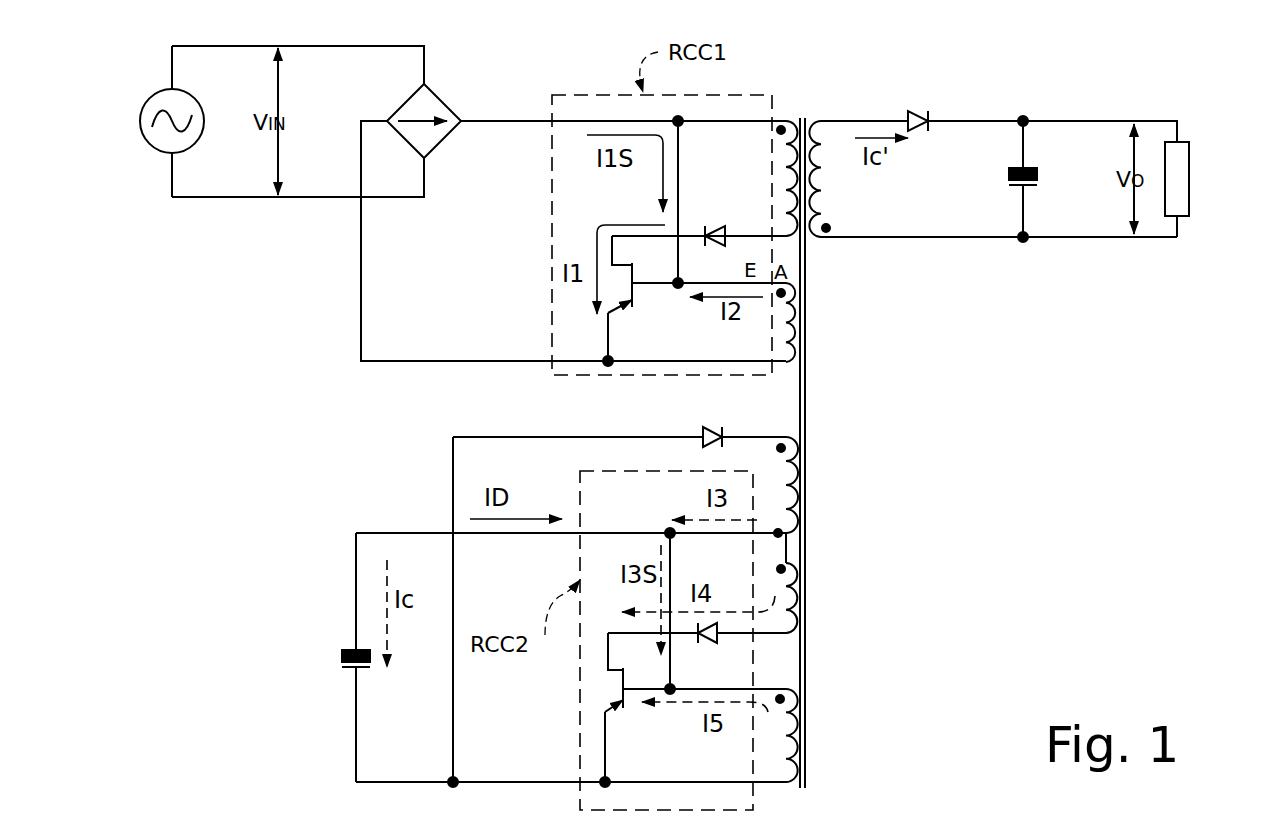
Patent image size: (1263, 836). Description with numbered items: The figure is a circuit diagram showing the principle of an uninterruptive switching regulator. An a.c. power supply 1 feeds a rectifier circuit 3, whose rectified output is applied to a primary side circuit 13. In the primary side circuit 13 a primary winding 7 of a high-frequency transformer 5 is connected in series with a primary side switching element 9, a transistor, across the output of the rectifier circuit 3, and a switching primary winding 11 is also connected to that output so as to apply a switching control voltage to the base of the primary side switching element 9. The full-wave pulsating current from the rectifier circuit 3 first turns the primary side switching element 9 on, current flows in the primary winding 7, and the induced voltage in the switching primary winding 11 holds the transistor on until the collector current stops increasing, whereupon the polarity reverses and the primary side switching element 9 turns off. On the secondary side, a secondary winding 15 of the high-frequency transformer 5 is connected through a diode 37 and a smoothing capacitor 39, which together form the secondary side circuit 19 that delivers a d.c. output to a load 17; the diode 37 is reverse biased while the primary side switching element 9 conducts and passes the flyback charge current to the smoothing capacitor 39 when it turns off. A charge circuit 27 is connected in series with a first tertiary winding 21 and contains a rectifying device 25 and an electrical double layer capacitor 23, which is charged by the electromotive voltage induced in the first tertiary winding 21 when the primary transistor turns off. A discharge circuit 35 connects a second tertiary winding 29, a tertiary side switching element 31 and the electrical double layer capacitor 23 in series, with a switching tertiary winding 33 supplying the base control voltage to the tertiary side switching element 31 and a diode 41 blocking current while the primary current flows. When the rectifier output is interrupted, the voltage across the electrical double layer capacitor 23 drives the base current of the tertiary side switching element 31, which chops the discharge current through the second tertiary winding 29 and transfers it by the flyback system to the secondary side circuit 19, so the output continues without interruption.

The a.c. power supply 1 is at (200, 114).
The rectifier circuit 3 is at (456, 88).
The high-frequency transformer 5 is at (808, 383).
The primary winding 7 is at (789, 118).
The primary side switching element 9 is at (634, 293).
The switching primary winding 11 is at (786, 364).
The primary side circuit 13 is at (569, 106).
The secondary winding 15 is at (823, 240).
The load 17 is at (1189, 178).
The secondary side circuit 19 is at (948, 244).
The first tertiary winding 21 is at (806, 468).
The electrical double layer capacitor 23 is at (342, 664).
The rectifying device 25 is at (703, 430).
The charge circuit 27 is at (493, 464).
The second tertiary winding 29 is at (806, 600).
The tertiary side switching element 31 is at (626, 704).
The switching tertiary winding 33 is at (806, 735).
The discharge circuit 35 is at (523, 730).
The diode 37 is at (916, 112).
The smoothing capacitor 39 is at (1009, 200).
The diode 41 is at (716, 640).